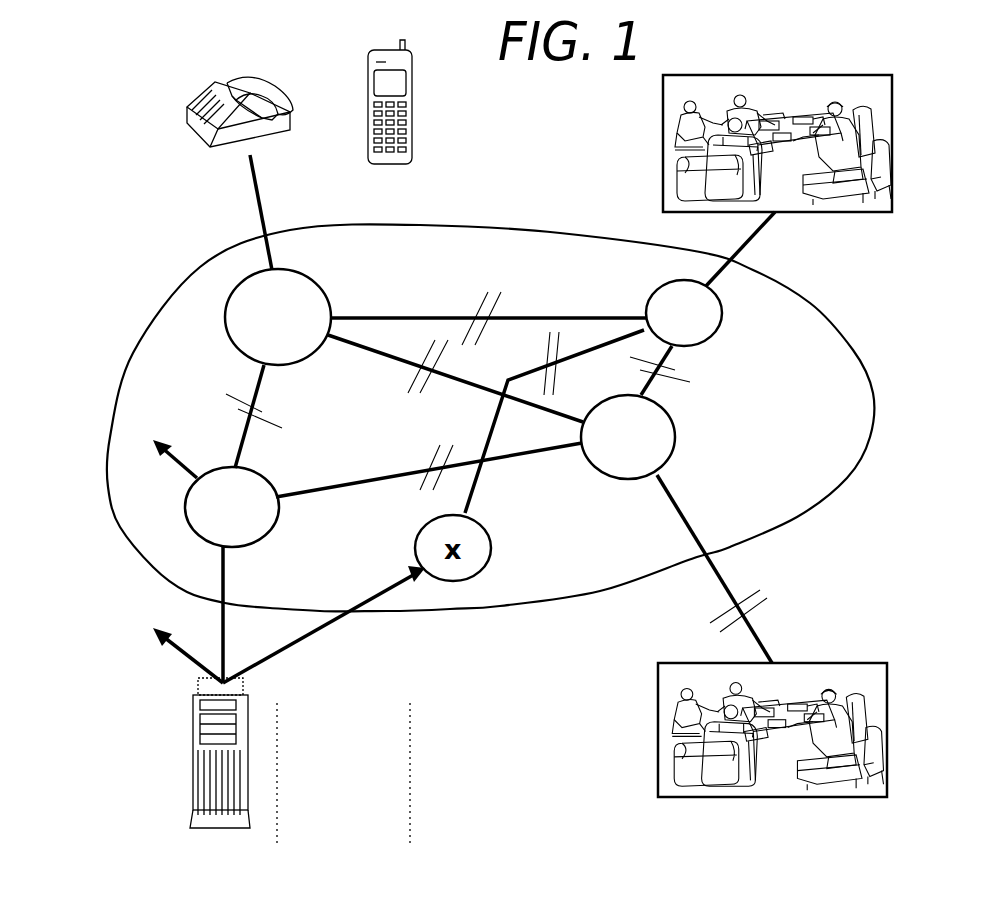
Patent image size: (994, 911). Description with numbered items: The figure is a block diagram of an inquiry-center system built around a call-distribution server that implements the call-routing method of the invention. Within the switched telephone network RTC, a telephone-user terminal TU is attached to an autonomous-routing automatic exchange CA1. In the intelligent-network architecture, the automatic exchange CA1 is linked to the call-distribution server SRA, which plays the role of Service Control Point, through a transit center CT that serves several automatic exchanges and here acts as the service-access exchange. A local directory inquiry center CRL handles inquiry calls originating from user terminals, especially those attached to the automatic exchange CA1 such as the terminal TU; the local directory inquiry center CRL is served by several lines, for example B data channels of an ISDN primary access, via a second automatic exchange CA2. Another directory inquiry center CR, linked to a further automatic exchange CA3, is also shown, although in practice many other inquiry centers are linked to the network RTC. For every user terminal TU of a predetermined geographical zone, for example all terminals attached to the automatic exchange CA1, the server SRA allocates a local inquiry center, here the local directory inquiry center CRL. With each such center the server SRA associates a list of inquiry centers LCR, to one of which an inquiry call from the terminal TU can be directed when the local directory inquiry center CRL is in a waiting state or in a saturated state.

The telephone-user terminal TU is at (255, 80).
The switched telephone network RTC is at (223, 268).
The autonomous-routing automatic exchange CA1 is at (252, 338).
The second automatic exchange CA2 is at (668, 440).
The automatic exchange CA3 is at (707, 325).
The transit center CT is at (258, 530).
The call-distribution server SRA is at (245, 685).
The directory inquiry center CR is at (670, 155).
The local directory inquiry center CRL is at (855, 672).
The list of inquiry centers LCR is at (358, 783).